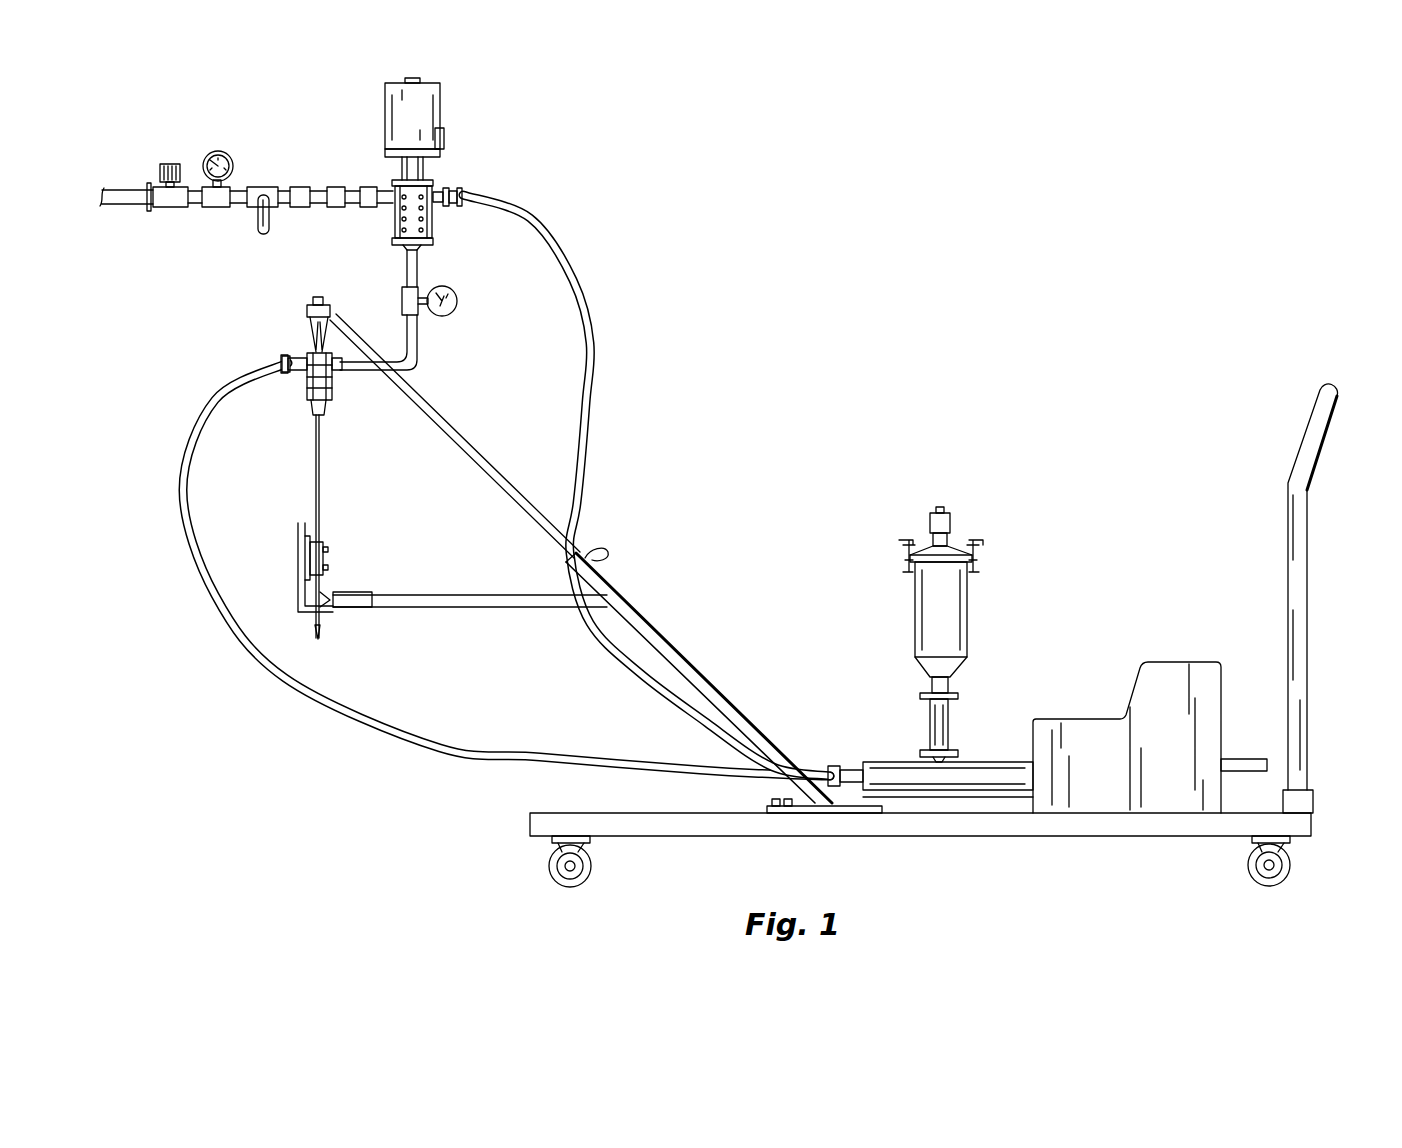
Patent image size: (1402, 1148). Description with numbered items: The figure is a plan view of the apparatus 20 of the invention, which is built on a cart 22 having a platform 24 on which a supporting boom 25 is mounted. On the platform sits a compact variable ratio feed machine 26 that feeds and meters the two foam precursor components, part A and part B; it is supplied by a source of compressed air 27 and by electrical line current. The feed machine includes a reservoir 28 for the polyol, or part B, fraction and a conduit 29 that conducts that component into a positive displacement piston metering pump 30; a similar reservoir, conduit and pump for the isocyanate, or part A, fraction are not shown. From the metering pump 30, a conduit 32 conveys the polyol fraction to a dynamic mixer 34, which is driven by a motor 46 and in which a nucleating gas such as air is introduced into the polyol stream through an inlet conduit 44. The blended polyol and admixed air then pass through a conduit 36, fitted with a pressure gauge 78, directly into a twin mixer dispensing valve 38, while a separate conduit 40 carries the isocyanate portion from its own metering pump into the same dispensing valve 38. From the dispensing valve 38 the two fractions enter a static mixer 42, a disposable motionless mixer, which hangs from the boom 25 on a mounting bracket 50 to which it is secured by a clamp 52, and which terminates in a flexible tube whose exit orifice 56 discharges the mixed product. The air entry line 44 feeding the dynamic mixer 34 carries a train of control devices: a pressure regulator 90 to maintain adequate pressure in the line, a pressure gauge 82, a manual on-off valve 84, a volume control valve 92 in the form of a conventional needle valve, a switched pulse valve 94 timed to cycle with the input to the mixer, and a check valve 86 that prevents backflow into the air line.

The apparatus 20 is at (1124, 498).
The cart 22 is at (1310, 505).
The platform 24 is at (1110, 838).
The supporting boom 25 is at (700, 660).
The variable ratio feed machine 26 is at (1190, 662).
The source of compressed air 27 is at (1250, 757).
The reservoir 28 is at (970, 612).
The conduit 29 is at (950, 708).
The positive displacement piston metering pump 30 is at (870, 760).
The conduit 32 is at (594, 342).
The dynamic mixer 34 is at (433, 218).
The conduit 36 is at (418, 345).
The twin mixer dispensing valve 38 is at (300, 380).
The conduit 40 is at (182, 523).
The static mixer 42 is at (322, 497).
The inlet conduit 44 is at (128, 188).
The motor 46 is at (440, 105).
The mounting bracket 50 is at (490, 610).
The clamp 52 is at (328, 556).
The exit orifice 56 is at (322, 627).
The pressure gauge 78 is at (457, 303).
The pressure gauge 82 is at (212, 150).
The manual on-off valve 84 is at (245, 207).
The check valve 86 is at (356, 186).
The pressure regulator 90 is at (170, 207).
The volume control valve 92 is at (292, 186).
The switched pulse valve 94 is at (336, 207).